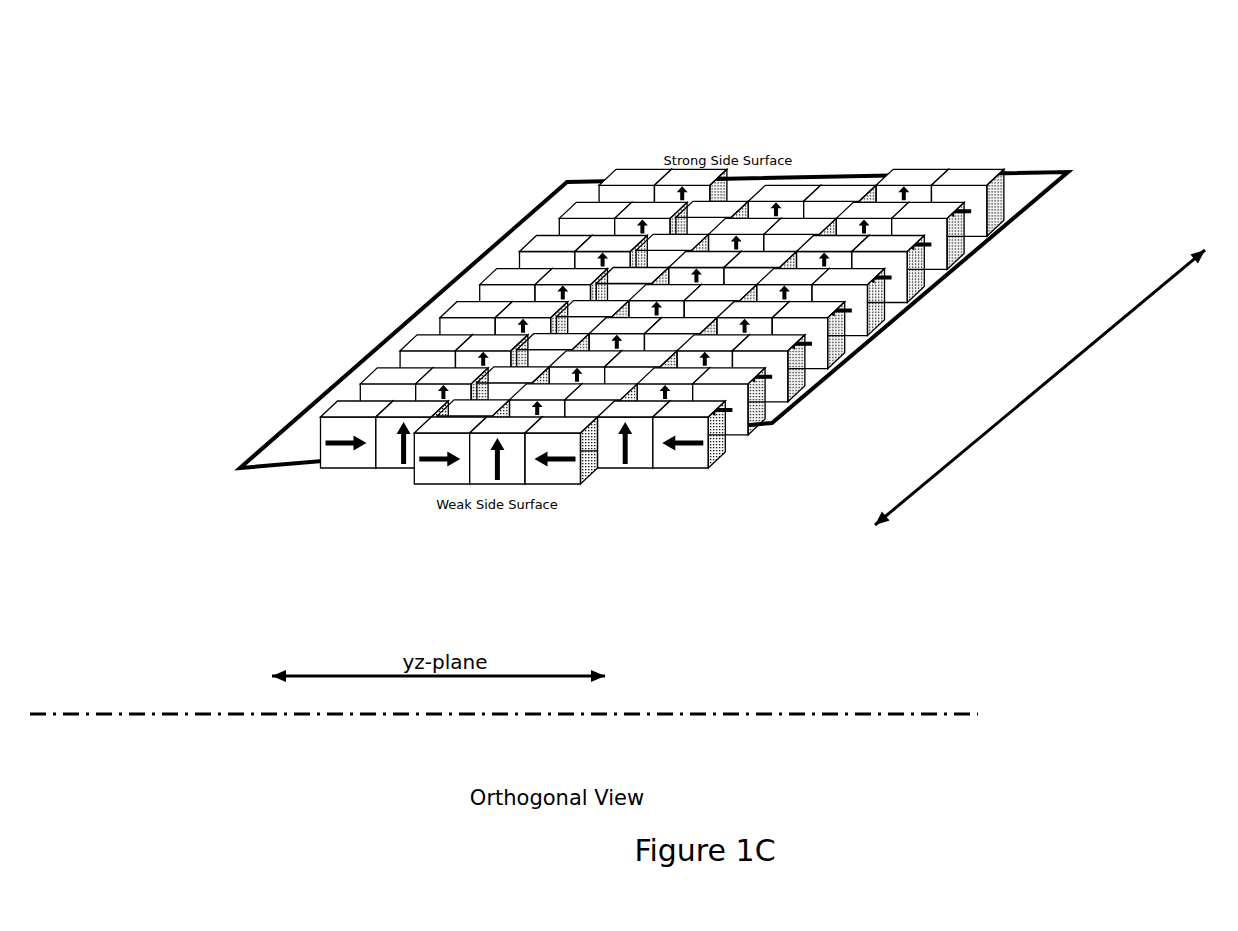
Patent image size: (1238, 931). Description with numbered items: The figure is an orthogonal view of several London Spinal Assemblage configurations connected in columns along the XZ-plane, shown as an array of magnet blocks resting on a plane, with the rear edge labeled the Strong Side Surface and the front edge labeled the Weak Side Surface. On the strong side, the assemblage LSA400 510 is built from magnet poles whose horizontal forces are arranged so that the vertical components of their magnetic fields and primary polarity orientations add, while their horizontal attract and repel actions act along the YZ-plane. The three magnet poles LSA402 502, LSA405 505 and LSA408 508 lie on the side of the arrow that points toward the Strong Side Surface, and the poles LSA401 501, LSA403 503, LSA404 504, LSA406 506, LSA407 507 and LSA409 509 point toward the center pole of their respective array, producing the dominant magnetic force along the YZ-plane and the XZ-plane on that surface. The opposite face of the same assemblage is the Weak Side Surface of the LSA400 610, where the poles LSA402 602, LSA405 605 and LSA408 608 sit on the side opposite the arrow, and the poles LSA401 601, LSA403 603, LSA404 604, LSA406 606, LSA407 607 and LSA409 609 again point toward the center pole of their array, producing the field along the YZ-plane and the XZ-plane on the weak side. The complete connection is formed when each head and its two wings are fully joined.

The magnet pole LSA401 501 is at (630, 180).
The magnet pole LSA402 502 is at (690, 184).
The magnet pole LSA403 503 is at (729, 192).
The magnet pole LSA404 504 is at (707, 148).
The magnet pole LSA405 505 is at (787, 190).
The magnet pole LSA406 506 is at (837, 193).
The magnet pole LSA407 507 is at (878, 170).
The magnet pole LSA408 508 is at (928, 167).
The magnet pole LSA409 509 is at (1009, 171).
The LSA400 (London Spinal Assemblage configuration, Strong Side Surface) 510 is at (1040, 387).
The magnet pole LSA401 601 is at (681, 470).
The magnet pole LSA402 602 is at (623, 470).
The magnet pole LSA403 603 is at (579, 485).
The magnet pole LSA404 604 is at (549, 517).
The magnet pole LSA405 605 is at (492, 485).
The magnet pole LSA406 606 is at (437, 485).
The magnet pole LSA407 607 is at (413, 514).
The magnet pole LSA408 608 is at (400, 470).
The magnet pole LSA409 609 is at (348, 470).
The LSA400 (London Spinal Assemblage configuration, Weak Side Surface) 610 is at (654, 320).